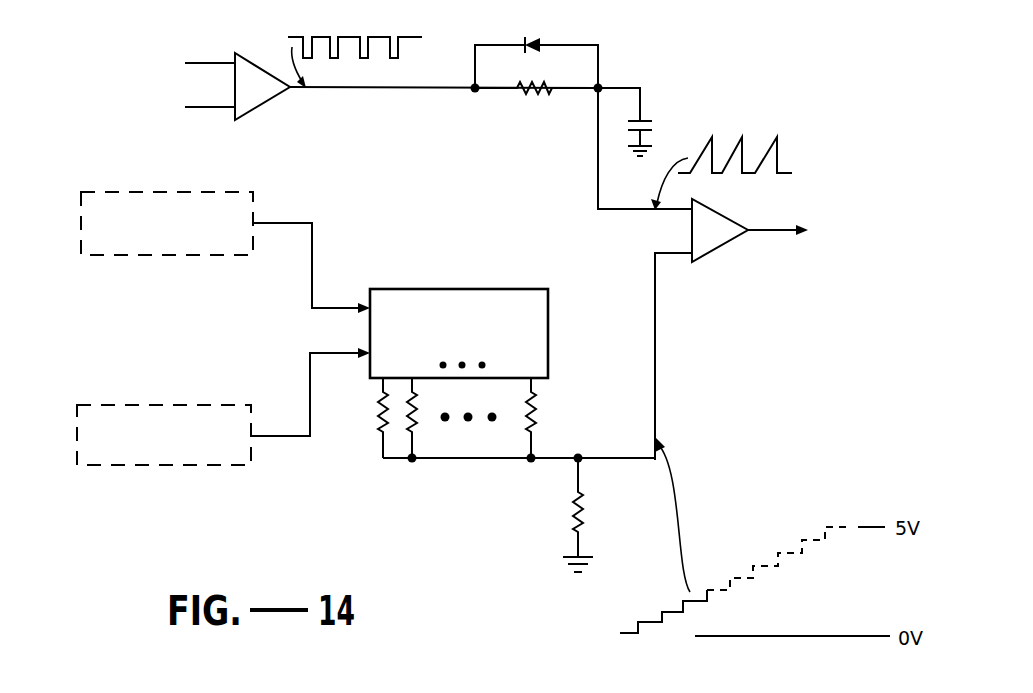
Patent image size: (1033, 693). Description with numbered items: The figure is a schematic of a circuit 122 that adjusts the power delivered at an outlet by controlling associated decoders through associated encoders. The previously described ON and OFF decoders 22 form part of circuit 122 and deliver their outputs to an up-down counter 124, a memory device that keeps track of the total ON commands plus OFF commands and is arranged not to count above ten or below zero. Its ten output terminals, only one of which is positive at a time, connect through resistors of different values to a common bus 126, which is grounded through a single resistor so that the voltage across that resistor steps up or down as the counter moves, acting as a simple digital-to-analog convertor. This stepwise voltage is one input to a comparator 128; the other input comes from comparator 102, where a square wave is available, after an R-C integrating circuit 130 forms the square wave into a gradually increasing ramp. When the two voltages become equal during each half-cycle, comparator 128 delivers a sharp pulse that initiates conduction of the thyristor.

The ON and OFF decoders 22 is at (97, 262).
The comparator 102 is at (260, 92).
The circuit 122 is at (142, 122).
The up-down counter 124 is at (444, 298).
The common bus 126 is at (483, 460).
The comparator 128 is at (718, 243).
The R-C integrating circuit 130 is at (619, 69).